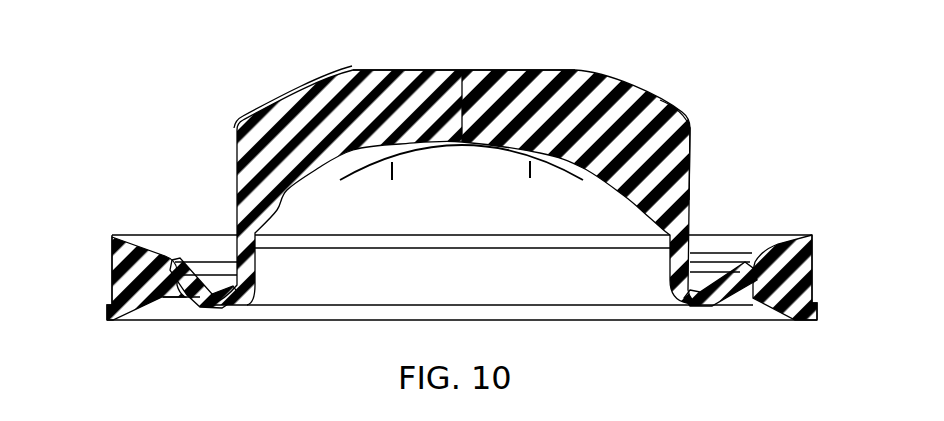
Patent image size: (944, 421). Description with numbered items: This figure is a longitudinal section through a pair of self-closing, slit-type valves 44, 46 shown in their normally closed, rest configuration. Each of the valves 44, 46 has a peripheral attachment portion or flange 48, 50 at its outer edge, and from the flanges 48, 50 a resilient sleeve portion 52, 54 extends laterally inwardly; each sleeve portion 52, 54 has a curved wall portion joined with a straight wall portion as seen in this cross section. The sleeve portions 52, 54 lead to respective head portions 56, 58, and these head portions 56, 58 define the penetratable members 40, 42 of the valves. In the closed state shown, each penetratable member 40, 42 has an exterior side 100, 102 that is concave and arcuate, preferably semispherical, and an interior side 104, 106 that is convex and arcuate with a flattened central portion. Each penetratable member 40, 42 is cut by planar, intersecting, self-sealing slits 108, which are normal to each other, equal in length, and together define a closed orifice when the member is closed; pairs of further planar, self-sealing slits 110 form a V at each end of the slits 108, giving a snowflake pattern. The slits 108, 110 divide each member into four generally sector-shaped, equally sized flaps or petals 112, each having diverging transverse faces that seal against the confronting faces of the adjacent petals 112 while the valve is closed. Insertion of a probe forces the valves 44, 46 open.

The penetratable member 40 is at (481, 159).
The penetratable member 42 is at (627, 87).
The self-closing slit-type valve 44 is at (439, 167).
The self-closing slit-type valve 46 is at (195, 105).
The peripheral attachment portion or flange 48 is at (439, 264).
The peripheral attachment portion or flange 50 is at (115, 272).
The resilient sleeve portion 52 is at (459, 253).
The resilient sleeve portion 54 is at (223, 289).
The head portion 56 is at (706, 143).
The head portion 58 is at (673, 108).
The exterior side 100 is at (462, 261).
The exterior side 102 is at (290, 203).
The interior side 104 is at (293, 83).
The interior side 106 is at (341, 72).
The self-sealing slits 108 is at (460, 69).
The self-sealing slits 110 is at (560, 172).
The flaps or petals 112 is at (413, 71).